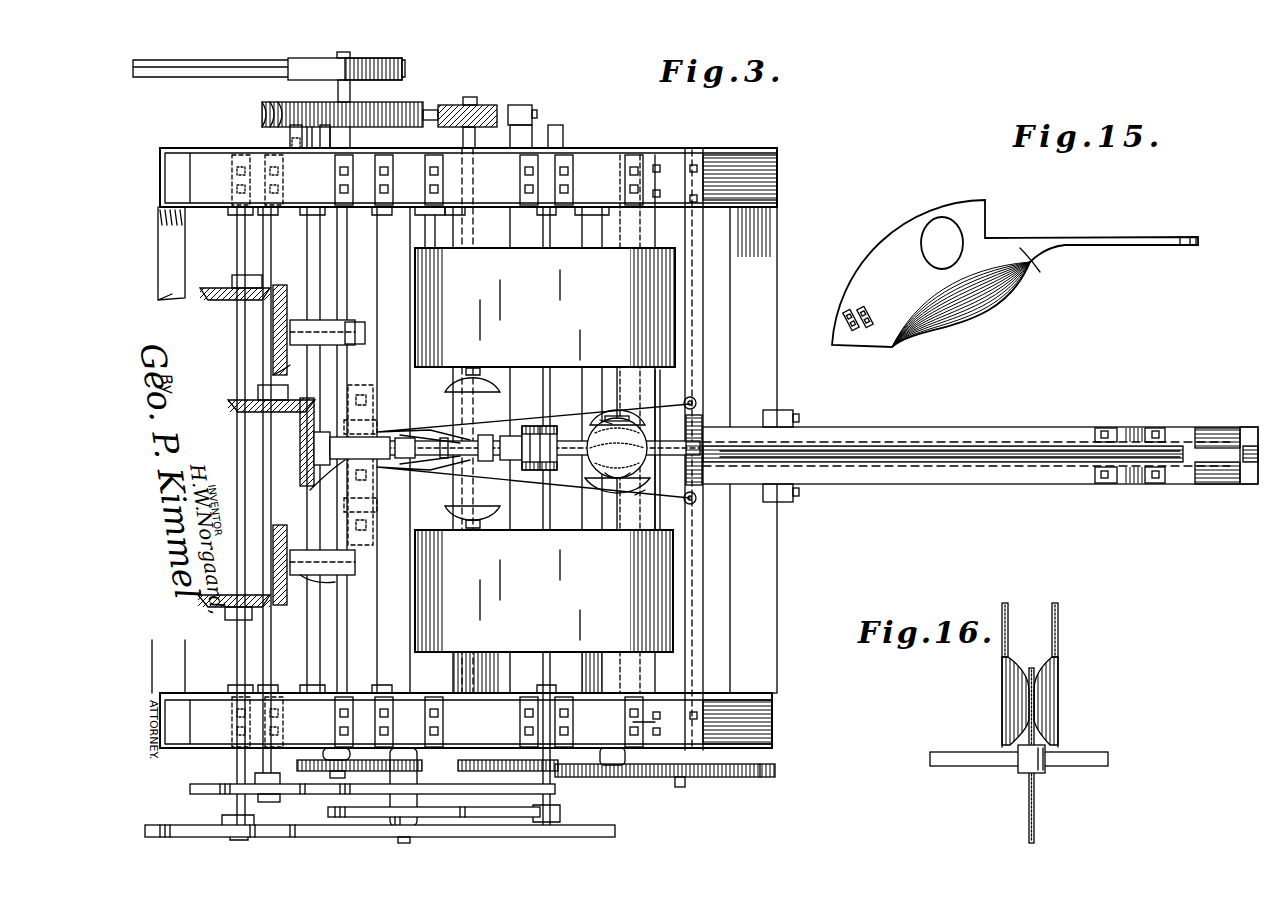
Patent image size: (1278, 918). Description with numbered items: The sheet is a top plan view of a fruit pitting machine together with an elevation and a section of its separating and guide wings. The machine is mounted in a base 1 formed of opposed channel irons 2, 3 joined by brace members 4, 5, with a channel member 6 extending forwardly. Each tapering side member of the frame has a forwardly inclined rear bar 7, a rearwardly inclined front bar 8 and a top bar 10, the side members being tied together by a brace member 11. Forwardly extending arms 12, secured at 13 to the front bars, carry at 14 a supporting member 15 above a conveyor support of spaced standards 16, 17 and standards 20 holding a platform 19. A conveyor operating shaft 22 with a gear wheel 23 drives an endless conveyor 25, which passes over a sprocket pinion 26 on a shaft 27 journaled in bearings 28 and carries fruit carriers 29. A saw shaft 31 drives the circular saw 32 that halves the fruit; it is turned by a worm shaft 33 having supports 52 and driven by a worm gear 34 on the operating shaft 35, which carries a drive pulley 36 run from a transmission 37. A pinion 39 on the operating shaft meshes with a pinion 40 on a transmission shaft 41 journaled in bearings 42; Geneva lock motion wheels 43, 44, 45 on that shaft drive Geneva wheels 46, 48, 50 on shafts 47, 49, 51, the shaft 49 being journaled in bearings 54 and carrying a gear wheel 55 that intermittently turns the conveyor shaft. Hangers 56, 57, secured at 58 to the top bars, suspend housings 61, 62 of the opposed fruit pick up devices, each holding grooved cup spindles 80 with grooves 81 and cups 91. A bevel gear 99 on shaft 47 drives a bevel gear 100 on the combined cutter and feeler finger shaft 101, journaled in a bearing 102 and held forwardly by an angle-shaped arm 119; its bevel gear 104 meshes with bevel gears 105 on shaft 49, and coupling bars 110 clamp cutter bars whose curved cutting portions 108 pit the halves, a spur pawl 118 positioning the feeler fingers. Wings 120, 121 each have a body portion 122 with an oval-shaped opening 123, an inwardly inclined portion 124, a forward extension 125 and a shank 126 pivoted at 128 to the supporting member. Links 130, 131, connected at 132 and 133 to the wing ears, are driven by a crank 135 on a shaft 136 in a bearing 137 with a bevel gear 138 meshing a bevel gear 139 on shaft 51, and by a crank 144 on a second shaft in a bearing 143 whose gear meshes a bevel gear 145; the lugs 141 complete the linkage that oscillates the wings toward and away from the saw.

In FIG. 3, the base 1 is at (772, 750).
In FIG. 3, the channel iron 2 is at (771, 152).
In FIG. 3, the channel iron 3 is at (665, 700).
In FIG. 3, the brace member 4 is at (760, 307).
In FIG. 3, the brace member 5 is at (158, 268).
In FIG. 3, the channel member 6 is at (1036, 427).
In FIG. 3, the rear bar 7 is at (468, 448).
In FIG. 3, the front bar 8 is at (725, 170).
In FIG. 3, the top bar 10 is at (662, 187).
In FIG. 3, the brace member 11 is at (270, 236).
In FIG. 3, the forwardly extending arm 12 is at (650, 155).
In FIG. 3, the securing point 13 is at (642, 443).
In FIG. 3, the connection 14 is at (690, 170).
In FIG. 3, the supporting member 15 is at (695, 333).
In FIG. 3, the standard 16 is at (1235, 440).
In FIG. 3, the standard 17 is at (1210, 428).
In FIG. 3, the platform 19 is at (860, 428).
In FIG. 3, the standard 20 is at (785, 415).
In FIG. 3, the conveyor operating shaft 22 is at (685, 788).
In FIG. 3, the gear wheel 23 is at (768, 778).
In FIG. 3, the endless conveyor 25 is at (950, 447).
In FIG. 3, the sprocket pinion 26 is at (1155, 487).
In FIG. 3, the shaft 27 is at (1132, 428).
In FIG. 3, the bearing 28 is at (1105, 428).
In FIG. 3, the fruit carrier 29 is at (1195, 510).
In FIG. 3, the saw shaft 31 is at (462, 138).
In FIG. 16, the saw shaft 31 is at (958, 746).
In FIG. 3, the circular saw 32 is at (522, 90).
In FIG. 16, the circular saw 32 is at (1032, 668).
In FIG. 3, the worm shaft 33 is at (427, 109).
In FIG. 3, the worm gear 34 is at (383, 100).
In FIG. 3, the operating shaft 35 is at (337, 262).
In FIG. 3, the drive pulley 36 is at (400, 68).
In FIG. 3, the transmission 37 is at (185, 60).
In FIG. 3, the pinion 39 is at (348, 763).
In FIG. 3, the pinion 40 is at (445, 778).
In FIG. 3, the transmission shaft 41 is at (410, 618).
In FIG. 3, the bearing 42 is at (430, 227).
In FIG. 3, the Geneva lock motion wheel 43 is at (490, 792).
In FIG. 3, the Geneva lock motion wheel 44 is at (382, 815).
In FIG. 3, the Geneva lock motion wheel 45 is at (330, 812).
In FIG. 3, the Geneva wheel 46 is at (280, 798).
In FIG. 3, the shaft 47 is at (270, 500).
In FIG. 3, the Geneva wheel 48 is at (595, 822).
In FIG. 3, the shaft 49 is at (545, 232).
In FIG. 3, the Geneva wheel 50 is at (182, 820).
In FIG. 3, the shaft 51 is at (237, 326).
In FIG. 3, the bearing 52 is at (295, 132).
In FIG. 3, the bearing 54 is at (548, 165).
In FIG. 3, the gear wheel 55 is at (610, 778).
In FIG. 3, the hanger 56 is at (503, 665).
In FIG. 3, the hanger 57 is at (598, 232).
In FIG. 3, the securing point 58 is at (590, 722).
In FIG. 3, the housing 61 is at (545, 307).
In FIG. 3, the housing 62 is at (544, 591).
In FIG. 3, the fruit holding cup spindle 80 is at (655, 385).
In FIG. 3, the groove 81 is at (617, 380).
In FIG. 3, the cup 91 is at (448, 386).
In FIG. 3, the bevel gear 99 is at (230, 388).
In FIG. 3, the bevel gear 100 is at (303, 442).
In FIG. 3, the combined cutter and feeler finger shaft 101 is at (500, 510).
In FIG. 3, the bearing 102 is at (320, 488).
In FIG. 3, the bevel gear 104 is at (511, 442).
In FIG. 3, the bevel gear 105 is at (565, 527).
In FIG. 3, the curved cutting portion 108 is at (420, 436).
In FIG. 3, the coupling bar 110 is at (400, 440).
In FIG. 3, the spur pawl 118 is at (602, 412).
In FIG. 3, the angle-shaped arm 119 is at (700, 425).
In FIG. 3, the wing 120 is at (605, 415).
In FIG. 3, the wing 121 is at (600, 498).
In FIG. 15, the body portion 122 is at (882, 240).
In FIG. 15, the oval-shaped opening 123 is at (942, 243).
In FIG. 16, the oval-shaped opening 123 is at (1003, 645).
In FIG. 3, the inclined portion 124 is at (505, 430).
In FIG. 15, the inclined portion 124 is at (975, 308).
In FIG. 16, the inclined portion 124 is at (1020, 702).
In FIG. 15, the forward extension 125 is at (1040, 271).
In FIG. 15, the shank 126 is at (1130, 247).
In FIG. 3, the pivot 128 is at (696, 400).
In FIG. 3, the link 130 is at (370, 378).
In FIG. 3, the link 131 is at (370, 520).
In FIG. 3, the pivotal connection 132 is at (370, 408).
In FIG. 3, the connection 133 is at (370, 482).
In FIG. 15, the connection 133 is at (870, 310).
In FIG. 3, the crank 135 is at (365, 332).
In FIG. 3, the shaft 136 is at (323, 322).
In FIG. 3, the bearing 137 is at (290, 340).
In FIG. 3, the bevel gear 138 is at (290, 292).
In FIG. 3, the bevel gear 139 is at (230, 284).
In FIG. 3, the sleeve 141 is at (355, 565).
In FIG. 3, the bearing 143 is at (320, 585).
In FIG. 3, the crank 144 is at (273, 545).
In FIG. 3, the bevel gear 145 is at (234, 598).